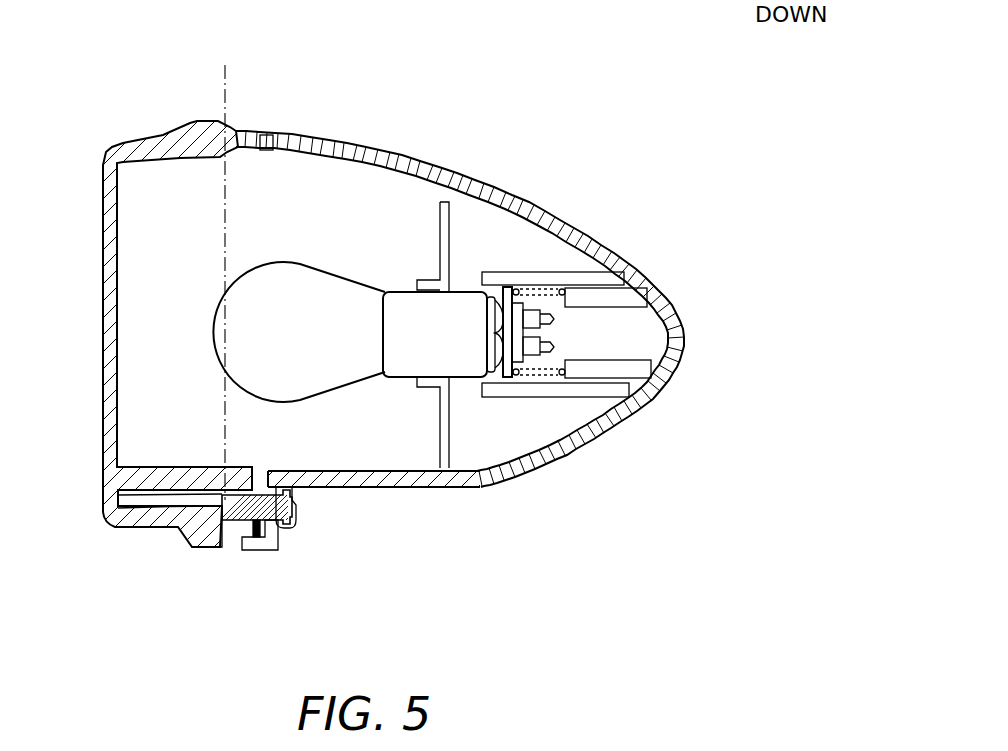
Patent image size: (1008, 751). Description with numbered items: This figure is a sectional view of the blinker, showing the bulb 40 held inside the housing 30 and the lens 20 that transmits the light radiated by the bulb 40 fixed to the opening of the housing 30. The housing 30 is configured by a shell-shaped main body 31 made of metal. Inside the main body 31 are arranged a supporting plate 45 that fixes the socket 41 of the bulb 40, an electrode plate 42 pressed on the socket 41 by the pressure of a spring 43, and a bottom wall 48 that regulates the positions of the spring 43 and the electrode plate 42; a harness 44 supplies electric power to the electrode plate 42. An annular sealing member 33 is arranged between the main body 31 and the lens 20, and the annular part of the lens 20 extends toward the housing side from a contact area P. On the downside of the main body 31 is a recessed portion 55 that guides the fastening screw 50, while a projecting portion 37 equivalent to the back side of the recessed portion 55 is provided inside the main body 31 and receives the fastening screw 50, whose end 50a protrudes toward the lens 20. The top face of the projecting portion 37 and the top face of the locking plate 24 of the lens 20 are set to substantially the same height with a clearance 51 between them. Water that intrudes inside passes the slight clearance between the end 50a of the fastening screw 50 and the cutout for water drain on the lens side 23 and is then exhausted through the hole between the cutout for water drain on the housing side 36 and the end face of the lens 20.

The contact area P is at (222, 110).
The lens 20 is at (102, 300).
The cutout for water drain on the lens side 23 is at (223, 488).
The locking plate 24 is at (188, 474).
The housing 30 is at (504, 300).
The main body 31 is at (472, 175).
The annular sealing member 33 is at (265, 152).
The cutout for water drain on the housing side 36 is at (243, 549).
The projecting portion 37 is at (340, 472).
The bulb 40 is at (307, 290).
The socket 41 is at (405, 305).
The electrode plate 42 is at (508, 380).
The spring 43 is at (546, 354).
The harness 44 is at (564, 376).
The supporting plate 45 is at (444, 432).
The bottom wall 48 is at (563, 282).
The fastening screw 50 is at (293, 512).
The end of the fastening screw 50a is at (228, 508).
The clearance 51 is at (262, 465).
The recessed portion 55 is at (368, 508).